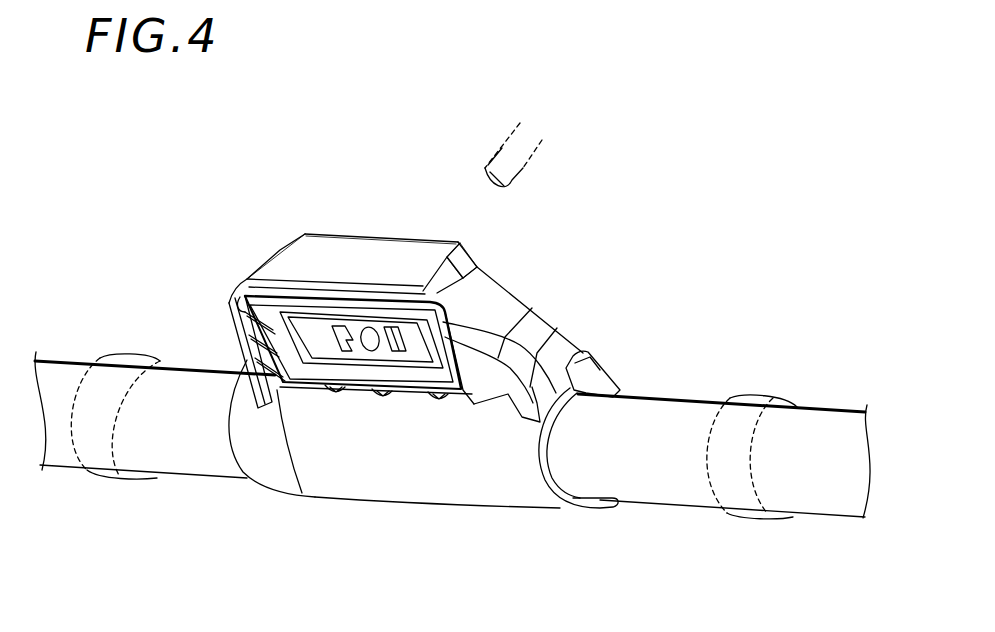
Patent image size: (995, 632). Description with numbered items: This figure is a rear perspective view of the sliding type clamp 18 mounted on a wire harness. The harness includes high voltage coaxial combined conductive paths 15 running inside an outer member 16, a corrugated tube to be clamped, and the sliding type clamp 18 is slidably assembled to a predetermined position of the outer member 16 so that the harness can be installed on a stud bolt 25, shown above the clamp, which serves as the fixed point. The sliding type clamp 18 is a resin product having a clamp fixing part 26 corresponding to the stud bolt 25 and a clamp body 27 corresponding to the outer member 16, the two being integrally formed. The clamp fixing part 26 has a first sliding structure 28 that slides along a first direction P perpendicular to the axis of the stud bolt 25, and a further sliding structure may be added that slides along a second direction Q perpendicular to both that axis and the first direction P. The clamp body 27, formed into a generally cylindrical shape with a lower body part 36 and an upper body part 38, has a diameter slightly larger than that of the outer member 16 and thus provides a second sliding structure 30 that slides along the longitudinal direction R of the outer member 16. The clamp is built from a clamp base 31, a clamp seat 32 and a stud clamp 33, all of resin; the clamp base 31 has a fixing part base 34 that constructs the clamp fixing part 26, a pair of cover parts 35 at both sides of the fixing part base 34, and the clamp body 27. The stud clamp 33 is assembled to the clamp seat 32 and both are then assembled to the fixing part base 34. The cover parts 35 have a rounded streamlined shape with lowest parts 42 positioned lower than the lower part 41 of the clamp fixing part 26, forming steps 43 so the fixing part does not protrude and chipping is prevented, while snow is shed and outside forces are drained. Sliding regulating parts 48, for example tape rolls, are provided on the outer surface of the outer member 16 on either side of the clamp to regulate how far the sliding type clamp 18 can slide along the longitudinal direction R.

The high voltage coaxial combined conductive path 15 is at (838, 505).
The outer member 16 is at (845, 428).
The sliding type clamp 18 is at (476, 261).
The stud bolt 25 is at (523, 168).
The clamp fixing part 26 is at (387, 238).
The clamp body 27 is at (513, 490).
The first sliding structure 28 is at (288, 284).
The second sliding structure 30 is at (550, 465).
The clamp base 31 is at (345, 247).
The clamp seat 32 is at (450, 318).
The stud clamp 33 is at (450, 242).
The fixing part base 34 is at (313, 262).
The cover part 35 is at (230, 347).
The lower body part 36 is at (435, 487).
The upper body part 38 is at (600, 377).
The lower part 41 is at (357, 372).
The lowest part 42 is at (248, 382).
The step 43 is at (278, 362).
The sliding regulating part 48 is at (86, 478).
The first direction P is at (298, 207).
The second direction Q is at (197, 165).
The longitudinal direction R is at (238, 495).